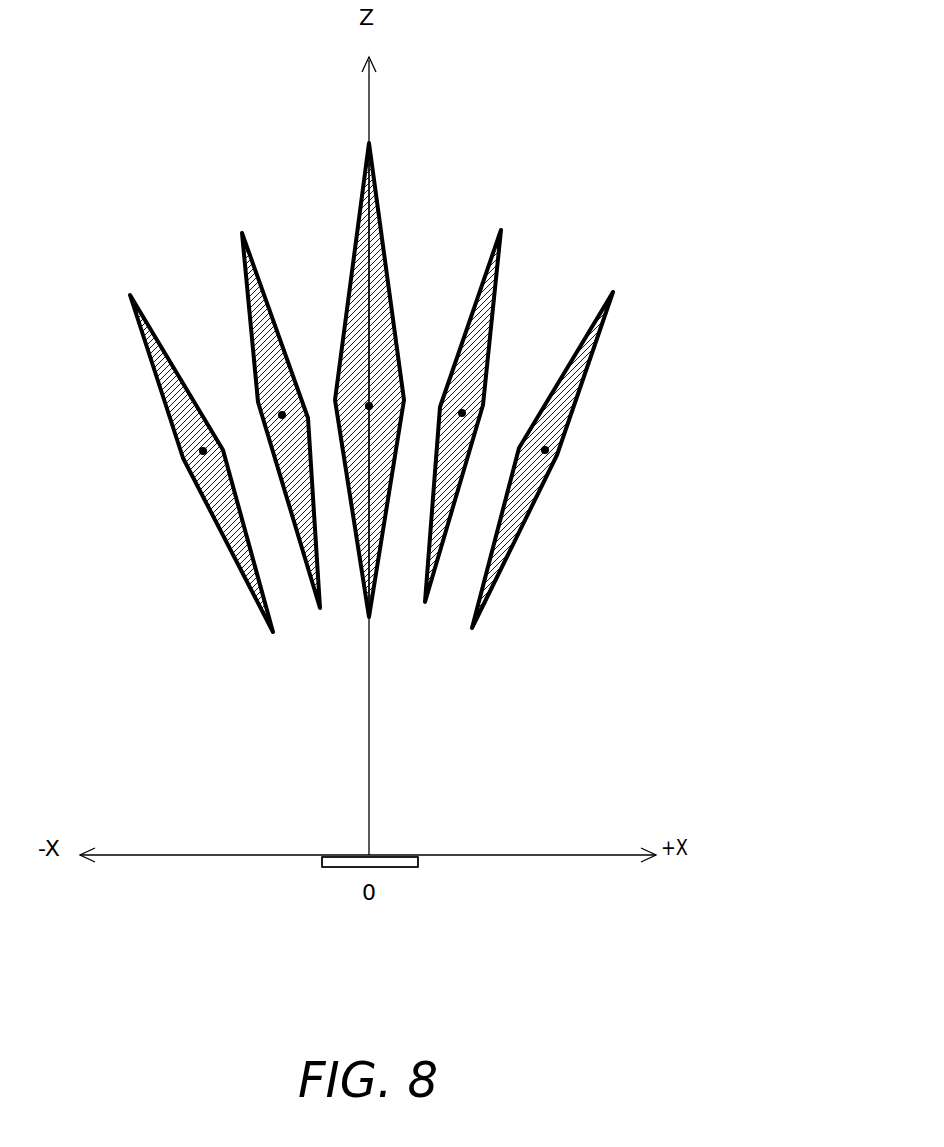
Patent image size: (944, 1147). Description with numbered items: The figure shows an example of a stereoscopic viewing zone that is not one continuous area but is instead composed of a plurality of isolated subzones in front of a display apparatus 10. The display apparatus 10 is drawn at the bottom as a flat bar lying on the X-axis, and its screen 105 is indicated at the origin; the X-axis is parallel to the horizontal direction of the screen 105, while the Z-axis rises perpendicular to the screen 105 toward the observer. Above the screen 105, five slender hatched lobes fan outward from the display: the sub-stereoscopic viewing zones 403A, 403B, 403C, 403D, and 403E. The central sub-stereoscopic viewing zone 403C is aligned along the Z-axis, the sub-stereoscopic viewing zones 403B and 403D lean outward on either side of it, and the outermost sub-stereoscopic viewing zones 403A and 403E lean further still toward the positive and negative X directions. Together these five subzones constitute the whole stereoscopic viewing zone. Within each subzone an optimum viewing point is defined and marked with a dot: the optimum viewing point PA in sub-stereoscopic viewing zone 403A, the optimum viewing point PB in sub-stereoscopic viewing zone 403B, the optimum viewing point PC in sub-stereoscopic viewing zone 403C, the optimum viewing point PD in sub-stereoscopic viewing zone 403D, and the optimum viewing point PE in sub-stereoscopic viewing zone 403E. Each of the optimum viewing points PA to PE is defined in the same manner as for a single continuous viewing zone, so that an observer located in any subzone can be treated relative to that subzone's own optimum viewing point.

The display apparatus 10 is at (407, 868).
The screen 105 is at (338, 854).
The sub-stereoscopic viewing zone 403A is at (608, 342).
The sub-stereoscopic viewing zone 403B is at (502, 270).
The sub-stereoscopic viewing zone 403C is at (380, 192).
The sub-stereoscopic viewing zone 403D is at (243, 257).
The sub-stereoscopic viewing zone 403E is at (172, 442).
The optimum viewing point PA is at (546, 451).
The optimum viewing point PB is at (486, 398).
The optimum viewing point PC is at (371, 406).
The optimum viewing point PD is at (282, 415).
The optimum viewing point PE is at (202, 451).